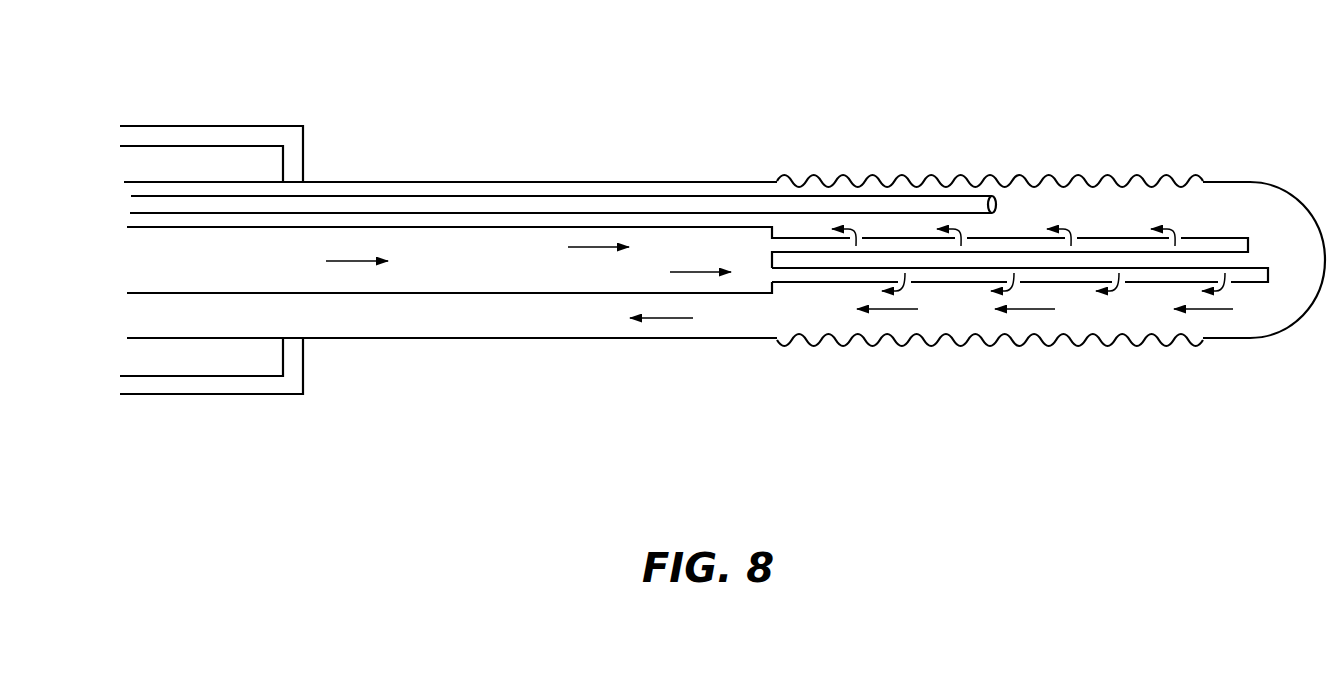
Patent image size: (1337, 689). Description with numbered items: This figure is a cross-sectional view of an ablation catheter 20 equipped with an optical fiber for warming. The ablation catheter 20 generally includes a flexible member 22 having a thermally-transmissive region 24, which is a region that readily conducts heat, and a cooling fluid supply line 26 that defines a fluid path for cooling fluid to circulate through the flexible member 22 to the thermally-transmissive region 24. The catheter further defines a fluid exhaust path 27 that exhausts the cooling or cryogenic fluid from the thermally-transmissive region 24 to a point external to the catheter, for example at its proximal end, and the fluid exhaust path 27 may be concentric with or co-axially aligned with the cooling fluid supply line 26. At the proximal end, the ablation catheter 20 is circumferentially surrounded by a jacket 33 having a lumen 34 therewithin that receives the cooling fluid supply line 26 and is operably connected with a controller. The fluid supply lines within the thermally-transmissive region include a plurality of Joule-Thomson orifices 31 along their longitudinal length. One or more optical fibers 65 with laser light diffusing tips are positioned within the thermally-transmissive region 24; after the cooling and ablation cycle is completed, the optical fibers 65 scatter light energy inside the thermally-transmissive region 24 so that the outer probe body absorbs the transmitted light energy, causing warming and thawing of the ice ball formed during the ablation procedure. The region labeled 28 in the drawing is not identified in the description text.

The ablation catheter 20 is at (1236, 158).
The flexible member 22 is at (995, 164).
The thermally-transmissive region 24 is at (845, 176).
The cooling fluid supply line 26 is at (687, 260).
The fluid exhaust path 27 is at (858, 318).
The corrugated section of outer sheath 28 is at (945, 320).
The Joule-Thomson orifices 31 is at (1118, 274).
The jacket 33 is at (250, 126).
The lumen 34 is at (172, 166).
The optical fibers 65 is at (690, 203).